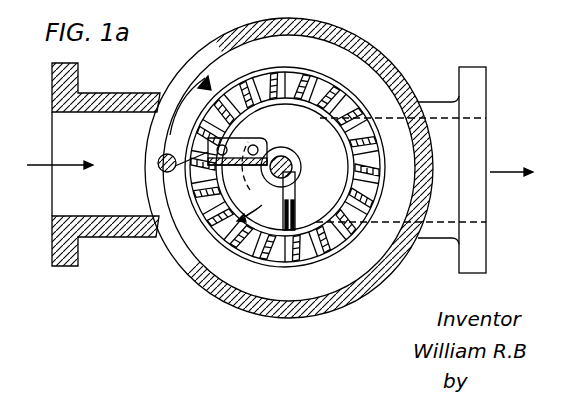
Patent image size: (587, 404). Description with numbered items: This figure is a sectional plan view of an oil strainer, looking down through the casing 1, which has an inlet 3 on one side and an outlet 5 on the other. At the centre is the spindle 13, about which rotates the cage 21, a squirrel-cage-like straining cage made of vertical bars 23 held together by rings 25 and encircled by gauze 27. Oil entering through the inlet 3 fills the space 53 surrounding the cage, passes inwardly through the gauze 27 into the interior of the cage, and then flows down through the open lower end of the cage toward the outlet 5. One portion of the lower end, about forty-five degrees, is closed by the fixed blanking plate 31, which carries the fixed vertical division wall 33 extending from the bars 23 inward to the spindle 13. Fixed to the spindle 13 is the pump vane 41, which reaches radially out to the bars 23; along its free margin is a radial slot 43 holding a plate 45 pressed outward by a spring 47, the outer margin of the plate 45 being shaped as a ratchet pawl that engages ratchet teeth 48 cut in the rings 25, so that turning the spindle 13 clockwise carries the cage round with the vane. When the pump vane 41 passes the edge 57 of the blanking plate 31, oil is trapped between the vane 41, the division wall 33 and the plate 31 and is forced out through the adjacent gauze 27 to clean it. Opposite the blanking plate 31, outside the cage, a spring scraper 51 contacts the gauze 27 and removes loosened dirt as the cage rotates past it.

The casing 1 is at (340, 44).
The inlet 3 is at (53, 146).
The outlet 5 is at (467, 148).
The spindle 13 is at (292, 150).
The cage 21 is at (276, 72).
The vertical bars 23 is at (357, 103).
The rings 25 is at (337, 240).
The gauze 27 is at (247, 72).
The blanking plate 31 is at (242, 182).
The division wall 33 is at (250, 140).
The pump vane 41 is at (296, 178).
The radial slot 43 is at (300, 212).
The plate 45 is at (297, 260).
The spring 47 is at (296, 198).
The ratchet teeth 48 is at (337, 115).
The spring scraper 51 is at (178, 188).
The space 53 is at (223, 68).
The edge 57 is at (243, 253).